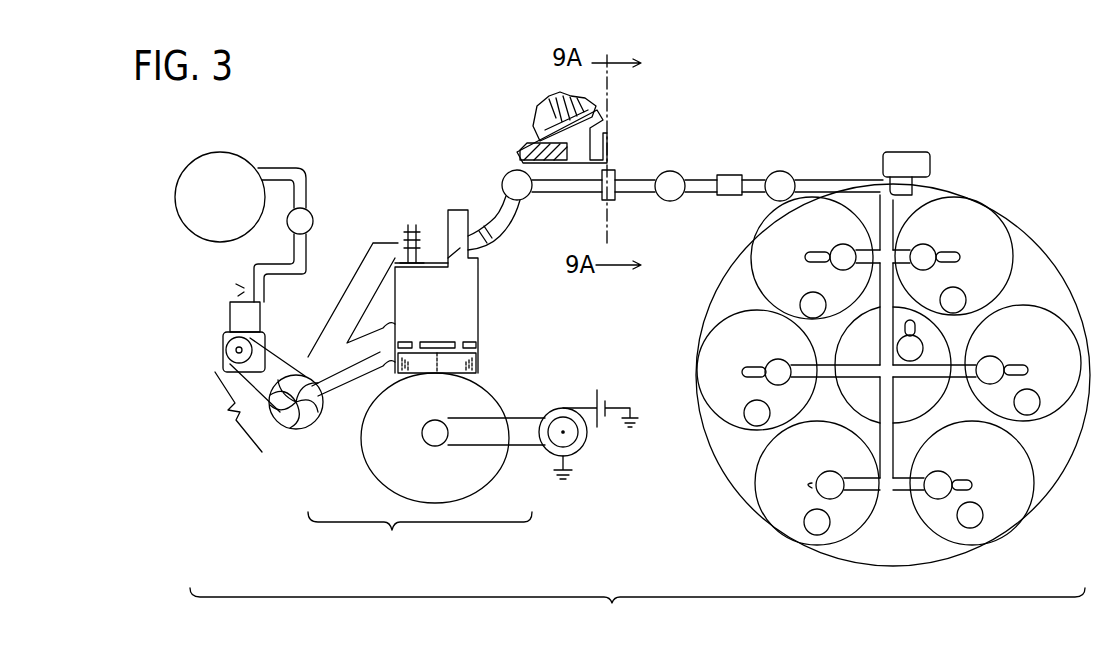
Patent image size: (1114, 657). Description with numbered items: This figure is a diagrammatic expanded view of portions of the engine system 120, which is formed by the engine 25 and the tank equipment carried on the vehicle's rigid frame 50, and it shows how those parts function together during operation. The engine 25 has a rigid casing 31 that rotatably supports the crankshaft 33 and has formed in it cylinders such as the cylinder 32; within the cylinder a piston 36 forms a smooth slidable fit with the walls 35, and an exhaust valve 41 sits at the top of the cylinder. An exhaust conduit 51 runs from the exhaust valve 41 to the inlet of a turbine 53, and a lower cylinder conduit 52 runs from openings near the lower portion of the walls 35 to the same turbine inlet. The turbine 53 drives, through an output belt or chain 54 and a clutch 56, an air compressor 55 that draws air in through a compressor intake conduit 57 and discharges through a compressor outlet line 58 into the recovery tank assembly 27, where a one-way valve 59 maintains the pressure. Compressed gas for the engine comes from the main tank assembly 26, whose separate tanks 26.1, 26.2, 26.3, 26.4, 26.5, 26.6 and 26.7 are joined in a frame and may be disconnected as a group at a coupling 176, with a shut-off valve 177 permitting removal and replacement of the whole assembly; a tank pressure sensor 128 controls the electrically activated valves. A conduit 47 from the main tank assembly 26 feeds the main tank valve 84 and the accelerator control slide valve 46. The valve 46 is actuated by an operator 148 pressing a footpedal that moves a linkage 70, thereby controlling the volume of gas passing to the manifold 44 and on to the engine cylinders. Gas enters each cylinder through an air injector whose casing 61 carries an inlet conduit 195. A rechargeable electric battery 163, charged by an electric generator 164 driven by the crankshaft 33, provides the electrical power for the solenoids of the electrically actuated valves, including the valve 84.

The engine 25 is at (420, 535).
The main tank assembly 26 is at (965, 218).
The main tank 26.1 is at (801, 273).
The main tank 26.2 is at (1005, 271).
The main tank 26.3 is at (739, 386).
The main tank 26.4 is at (939, 407).
The main tank 26.5 is at (1075, 377).
The main tank 26.6 is at (801, 496).
The main tank 26.7 is at (1017, 496).
The recovery tank assembly 27 is at (233, 211).
The casing 31 is at (392, 486).
The cylinder 32 is at (453, 292).
The crankshaft 33 is at (440, 446).
The cylinder walls 35 is at (480, 343).
The piston 36 is at (455, 365).
The exhaust valve 41 is at (424, 264).
The manifold 44 is at (511, 177).
The accelerator control valve 46 is at (606, 198).
The conduit 47 is at (697, 195).
The rigid frame 50 is at (523, 153).
The exhaust conduit 51 is at (390, 240).
The lower cylinder conduit 52 is at (345, 382).
The turbine 53 is at (306, 430).
The output belt or chain 54 is at (232, 393).
The air compressor 55 is at (243, 313).
The clutch 56 is at (222, 350).
The compressor intake conduit 57 is at (242, 288).
The compressor outlet line 58 is at (300, 248).
The one-way valve 59 is at (308, 232).
The casing 61 is at (477, 186).
The linkage 70 is at (603, 118).
The main tank valve 84 is at (670, 170).
The engine system 120 is at (637, 608).
The tank pressure sensor 128 is at (912, 162).
The operator 148 is at (520, 110).
The rechargeable electric battery 163 is at (586, 370).
The electric generator 164 is at (563, 408).
The coupling 176 is at (732, 174).
The shut-off valve 177 is at (770, 197).
The inlet conduit 195 is at (500, 224).